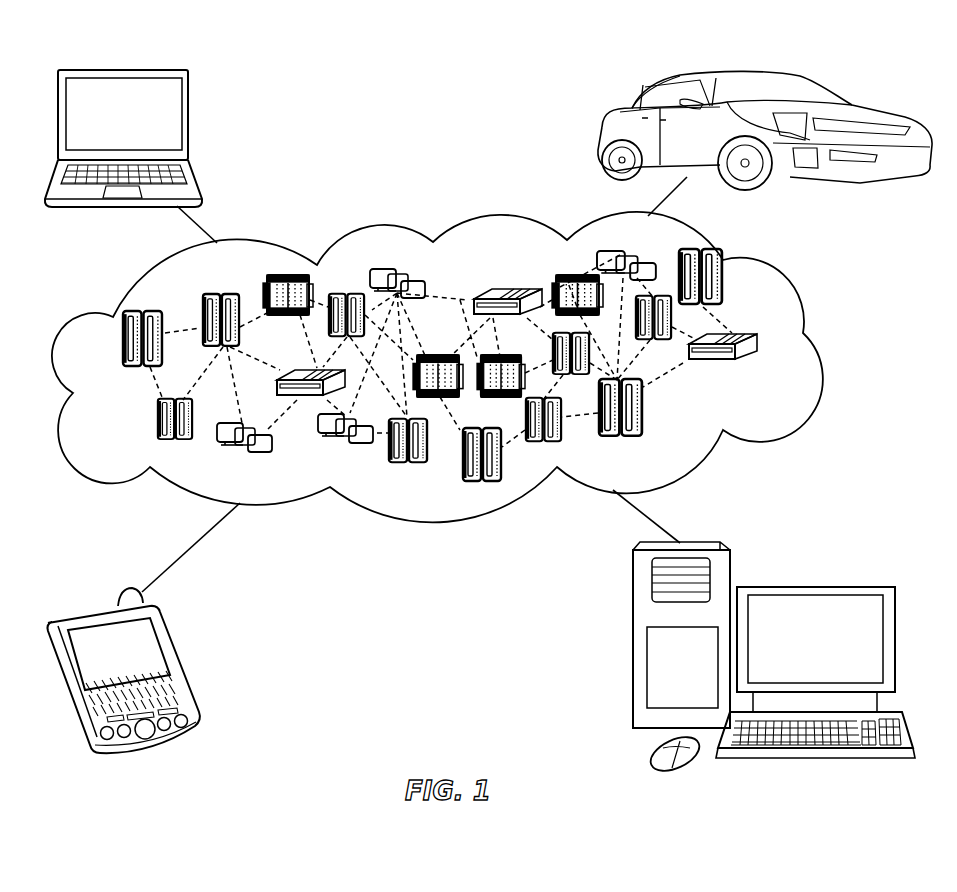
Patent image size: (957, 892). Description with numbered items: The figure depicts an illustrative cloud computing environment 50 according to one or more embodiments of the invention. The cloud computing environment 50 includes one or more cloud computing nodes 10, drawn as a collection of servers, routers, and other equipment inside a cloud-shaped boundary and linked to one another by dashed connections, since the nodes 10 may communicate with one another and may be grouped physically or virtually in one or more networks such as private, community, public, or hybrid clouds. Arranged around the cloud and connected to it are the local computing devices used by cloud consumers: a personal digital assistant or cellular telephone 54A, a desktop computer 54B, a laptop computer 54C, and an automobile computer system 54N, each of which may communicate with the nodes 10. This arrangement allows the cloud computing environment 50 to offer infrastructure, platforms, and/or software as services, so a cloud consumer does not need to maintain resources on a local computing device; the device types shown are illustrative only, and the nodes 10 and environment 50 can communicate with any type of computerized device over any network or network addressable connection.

The cloud computing nodes 10 is at (762, 373).
The cloud computing environment 50 is at (808, 343).
The personal digital assistant or cellular telephone 54A is at (180, 666).
The desktop computer 54B is at (812, 586).
The laptop computer 54C is at (189, 124).
The automobile computer system 54N is at (604, 136).